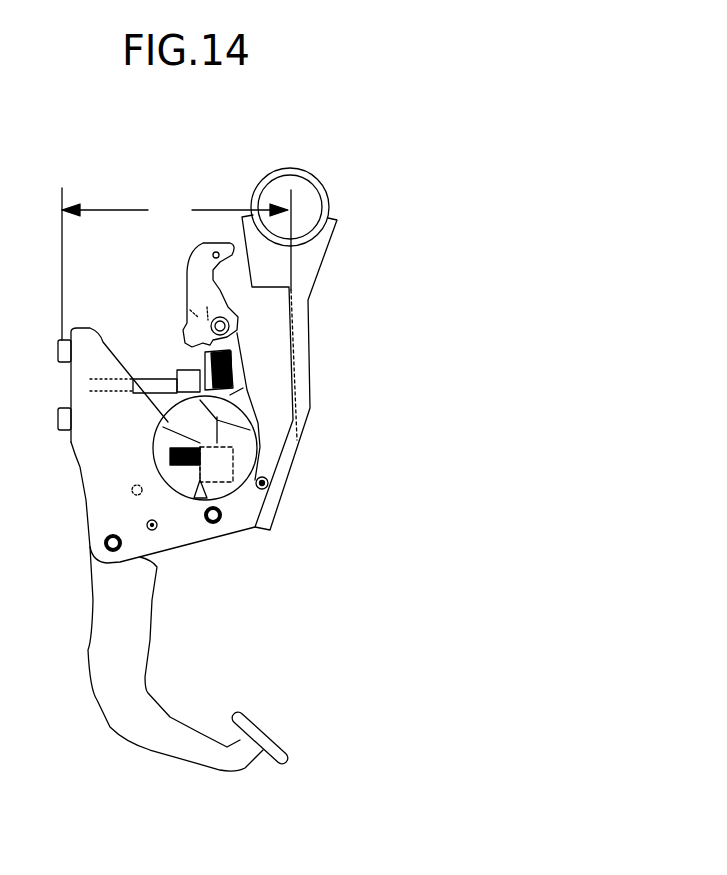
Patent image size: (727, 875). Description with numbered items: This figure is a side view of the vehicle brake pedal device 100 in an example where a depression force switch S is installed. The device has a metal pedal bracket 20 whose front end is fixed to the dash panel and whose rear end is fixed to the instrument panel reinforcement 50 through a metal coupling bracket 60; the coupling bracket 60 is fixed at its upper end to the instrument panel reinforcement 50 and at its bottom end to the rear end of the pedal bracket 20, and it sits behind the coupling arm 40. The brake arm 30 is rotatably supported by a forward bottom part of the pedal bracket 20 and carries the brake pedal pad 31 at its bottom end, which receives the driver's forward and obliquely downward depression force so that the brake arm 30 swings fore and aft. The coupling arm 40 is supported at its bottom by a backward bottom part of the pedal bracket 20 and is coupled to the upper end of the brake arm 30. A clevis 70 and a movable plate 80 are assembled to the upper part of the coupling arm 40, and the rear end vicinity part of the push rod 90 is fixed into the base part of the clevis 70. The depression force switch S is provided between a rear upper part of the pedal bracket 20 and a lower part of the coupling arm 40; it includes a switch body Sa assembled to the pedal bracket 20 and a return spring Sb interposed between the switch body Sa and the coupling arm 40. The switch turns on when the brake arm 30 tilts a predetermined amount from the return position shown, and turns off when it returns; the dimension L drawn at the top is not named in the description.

The distance L is at (175, 264).
The instrument panel reinforcement 50 is at (312, 182).
The coupling bracket 60 is at (310, 393).
The movable plate 80 is at (186, 268).
The clevis 70 is at (225, 352).
The push rod 90 is at (145, 375).
The coupling arm 40 is at (257, 412).
The vehicle brake pedal device 100 is at (290, 487).
The pedal bracket 20 is at (155, 549).
The brake arm 30 is at (137, 672).
The brake pedal pad 31 is at (268, 726).
The depression force switch S is at (200, 498).
The switch body Sa is at (243, 482).
The return spring Sb is at (170, 446).